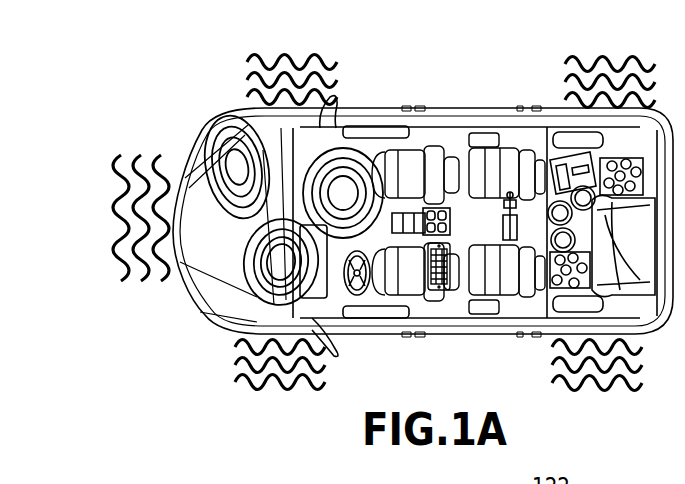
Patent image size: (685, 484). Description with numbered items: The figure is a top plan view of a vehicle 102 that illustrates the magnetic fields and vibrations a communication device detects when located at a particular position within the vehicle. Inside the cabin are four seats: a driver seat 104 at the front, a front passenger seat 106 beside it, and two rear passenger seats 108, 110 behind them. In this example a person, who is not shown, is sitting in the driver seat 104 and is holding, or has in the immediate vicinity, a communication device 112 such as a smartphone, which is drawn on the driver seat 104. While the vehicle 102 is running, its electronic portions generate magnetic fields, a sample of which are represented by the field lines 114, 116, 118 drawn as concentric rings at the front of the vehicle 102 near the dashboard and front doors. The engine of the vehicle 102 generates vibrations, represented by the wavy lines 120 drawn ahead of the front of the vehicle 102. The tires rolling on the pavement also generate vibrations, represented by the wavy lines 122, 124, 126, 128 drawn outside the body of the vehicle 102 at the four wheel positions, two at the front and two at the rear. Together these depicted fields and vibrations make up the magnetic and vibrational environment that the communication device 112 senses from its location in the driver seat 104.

The vehicle 102 is at (423, 226).
The driver seat 104 is at (399, 280).
The front passenger seat 106 is at (414, 172).
The rear passenger seat 108 is at (485, 274).
The rear passenger seat 110 is at (489, 173).
The communication device 112 is at (439, 290).
The field lines 114 is at (352, 197).
The field lines 116 is at (243, 167).
The field lines 118 is at (277, 263).
The lines 120 is at (116, 202).
The lines 122 is at (290, 62).
The lines 124 is at (280, 393).
The lines 126 is at (594, 393).
The lines 128 is at (614, 60).